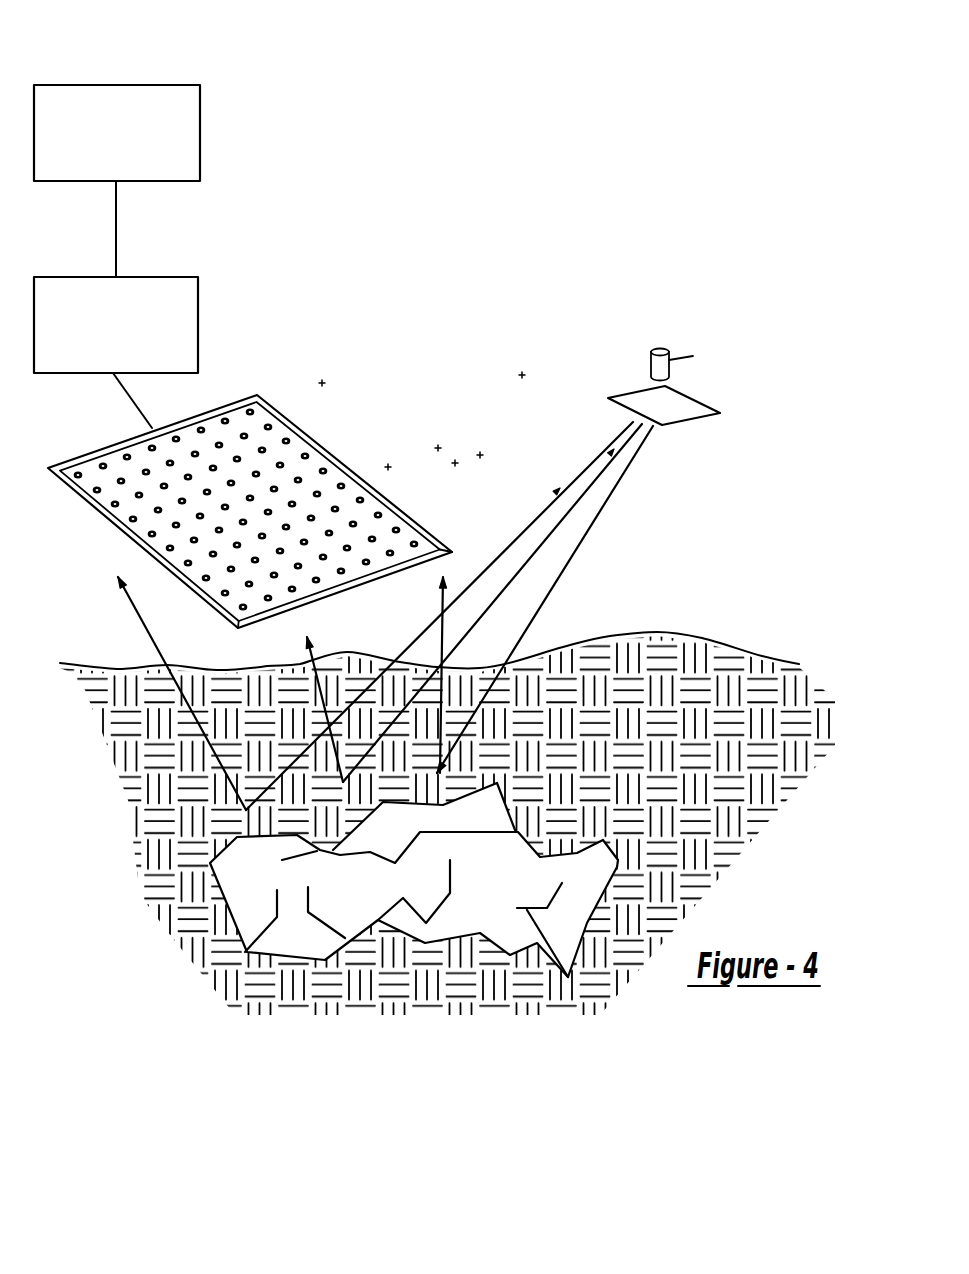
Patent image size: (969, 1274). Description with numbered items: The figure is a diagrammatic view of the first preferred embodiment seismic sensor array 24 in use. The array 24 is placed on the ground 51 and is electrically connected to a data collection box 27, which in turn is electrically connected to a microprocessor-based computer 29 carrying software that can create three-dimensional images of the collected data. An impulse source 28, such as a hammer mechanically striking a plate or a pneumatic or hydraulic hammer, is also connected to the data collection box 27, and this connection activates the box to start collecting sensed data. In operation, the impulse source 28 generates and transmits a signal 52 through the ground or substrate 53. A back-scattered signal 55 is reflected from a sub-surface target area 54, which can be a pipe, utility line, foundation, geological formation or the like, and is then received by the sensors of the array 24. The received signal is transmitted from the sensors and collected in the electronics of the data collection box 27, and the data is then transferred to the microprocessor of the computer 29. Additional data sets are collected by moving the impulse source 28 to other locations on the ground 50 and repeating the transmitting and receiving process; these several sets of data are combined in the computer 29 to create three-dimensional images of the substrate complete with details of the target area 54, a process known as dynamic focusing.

The computer 29 is at (167, 85).
The data collection box 27 is at (167, 277).
The seismic sensor array 24 is at (113, 443).
The ground 50 is at (345, 373).
The impulse source 28 is at (697, 417).
The ground 51 is at (622, 507).
The signal 52 is at (560, 577).
The substrate 53 is at (708, 727).
The sub-surface target area 54 is at (490, 878).
The back-scattered signal 55 is at (233, 765).